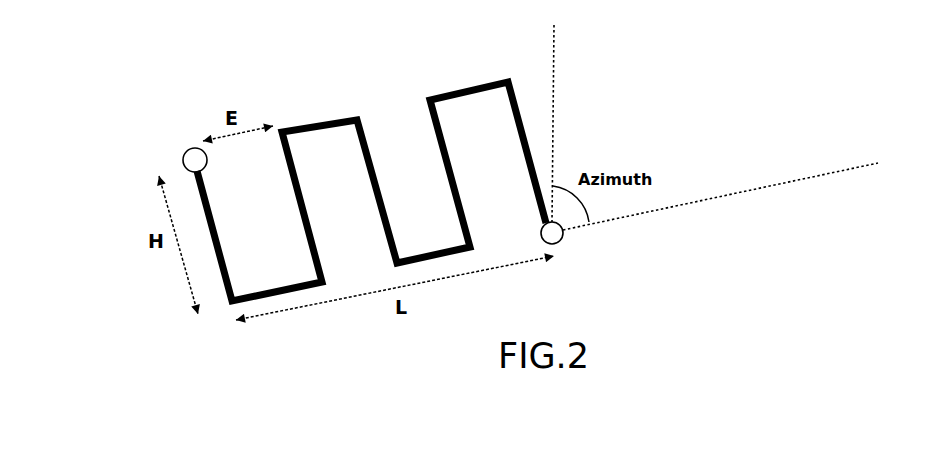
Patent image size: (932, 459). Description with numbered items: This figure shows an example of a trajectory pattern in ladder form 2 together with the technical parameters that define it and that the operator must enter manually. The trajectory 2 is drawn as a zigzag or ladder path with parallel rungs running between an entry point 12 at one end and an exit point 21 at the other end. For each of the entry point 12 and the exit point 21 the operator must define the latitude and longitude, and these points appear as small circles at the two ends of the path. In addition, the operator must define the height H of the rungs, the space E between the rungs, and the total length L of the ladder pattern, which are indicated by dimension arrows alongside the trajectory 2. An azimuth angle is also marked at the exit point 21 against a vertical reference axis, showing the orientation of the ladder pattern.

The trajectory pattern in ladder form 2 is at (325, 123).
The entry point 12 is at (184, 154).
The exit point 21 is at (562, 242).